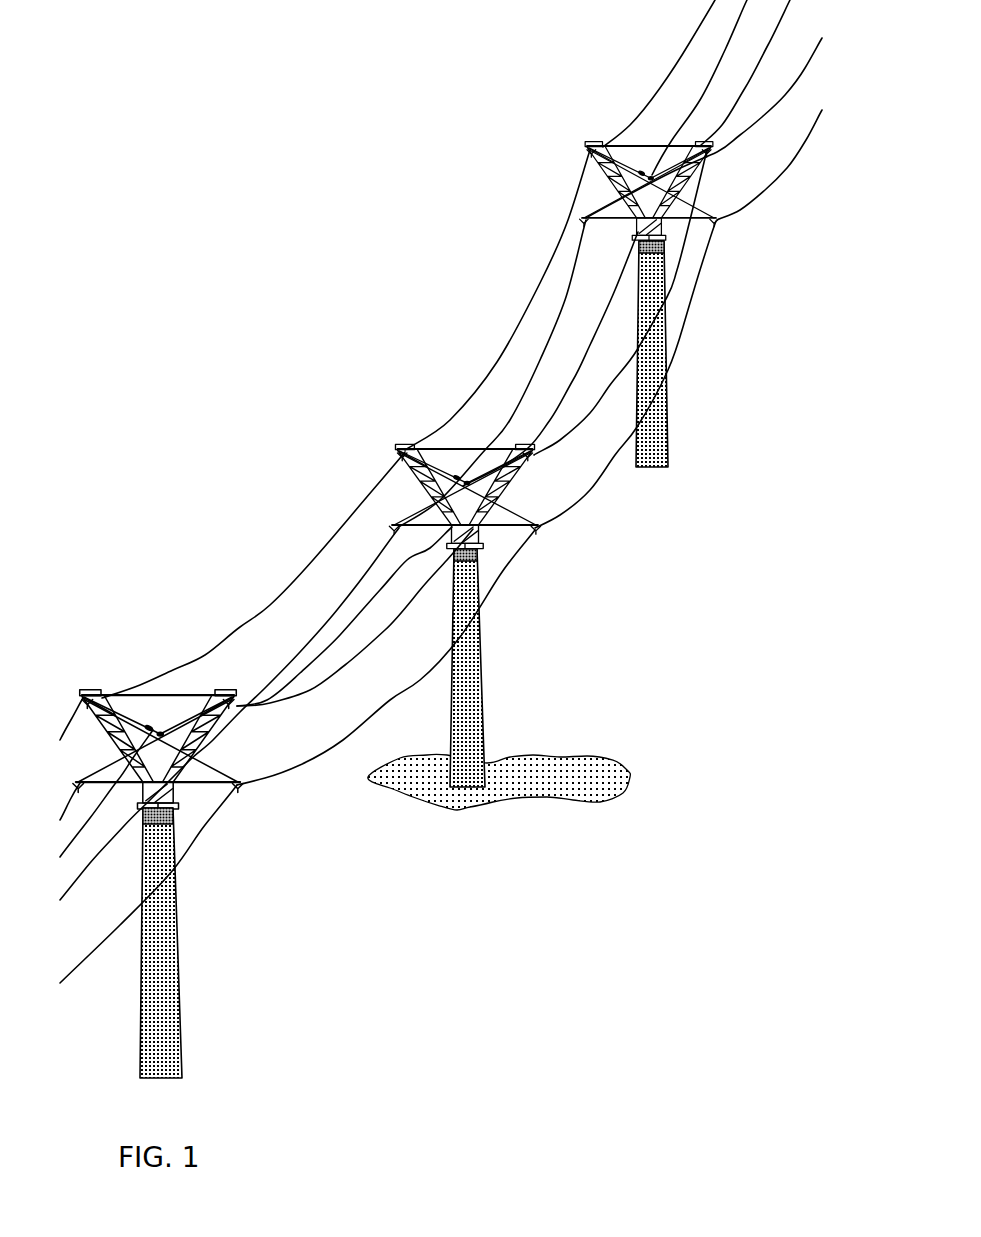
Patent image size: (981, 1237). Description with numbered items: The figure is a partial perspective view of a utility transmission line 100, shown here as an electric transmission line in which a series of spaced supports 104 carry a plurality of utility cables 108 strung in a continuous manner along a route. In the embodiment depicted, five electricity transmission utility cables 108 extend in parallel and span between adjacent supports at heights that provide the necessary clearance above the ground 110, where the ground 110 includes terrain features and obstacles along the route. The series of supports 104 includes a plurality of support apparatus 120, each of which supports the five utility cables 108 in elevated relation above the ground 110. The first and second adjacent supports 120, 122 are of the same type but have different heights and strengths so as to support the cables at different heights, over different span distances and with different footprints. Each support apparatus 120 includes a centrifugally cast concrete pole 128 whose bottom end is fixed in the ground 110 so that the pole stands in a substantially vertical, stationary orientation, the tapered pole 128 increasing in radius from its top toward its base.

The utility transmission line 100 is at (793, 81).
The spaced supports 104 is at (504, 615).
The utility cables 108 is at (500, 362).
The ground 110 is at (582, 806).
The support apparatus 120 is at (504, 615).
The second adjacent support 122 is at (670, 437).
The centrifugally cast concrete pole 128 is at (473, 655).